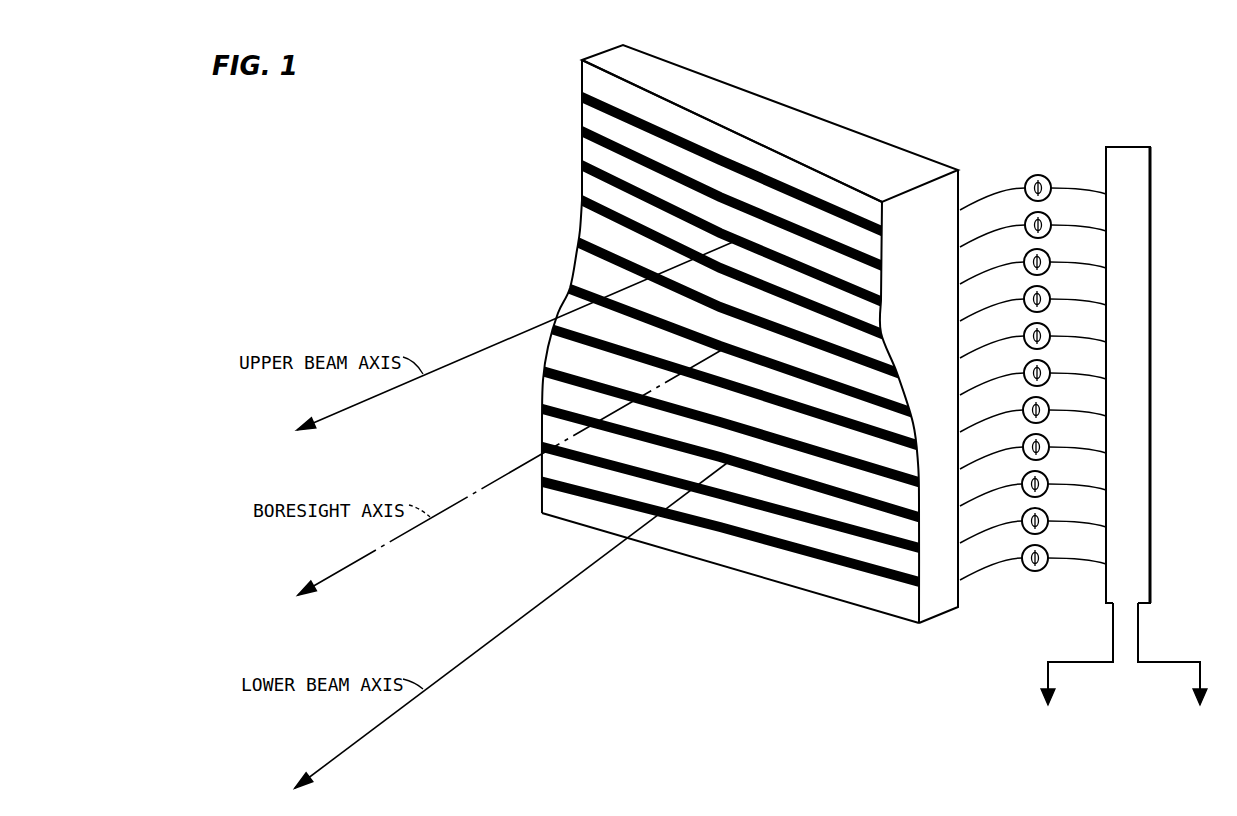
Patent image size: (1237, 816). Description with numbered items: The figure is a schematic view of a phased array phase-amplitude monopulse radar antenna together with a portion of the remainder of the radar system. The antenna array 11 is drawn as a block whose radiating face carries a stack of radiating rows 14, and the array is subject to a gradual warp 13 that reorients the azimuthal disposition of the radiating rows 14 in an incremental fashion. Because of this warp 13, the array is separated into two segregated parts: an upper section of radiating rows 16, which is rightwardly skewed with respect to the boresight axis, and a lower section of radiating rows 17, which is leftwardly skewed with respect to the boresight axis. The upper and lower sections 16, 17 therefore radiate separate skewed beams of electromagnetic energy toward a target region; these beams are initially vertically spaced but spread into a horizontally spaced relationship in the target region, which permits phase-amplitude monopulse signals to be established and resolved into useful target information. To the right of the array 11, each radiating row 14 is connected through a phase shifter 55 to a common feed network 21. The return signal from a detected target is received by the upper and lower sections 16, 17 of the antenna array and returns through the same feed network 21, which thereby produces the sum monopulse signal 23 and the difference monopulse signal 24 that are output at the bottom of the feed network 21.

The antenna array 11 is at (788, 110).
The gradual warp 13 is at (884, 340).
The radiating rows 14 is at (586, 106).
The upper section of radiating rows 16 is at (561, 222).
The lower section of radiating rows 17 is at (527, 410).
The feed network 21 is at (1130, 147).
The sum monopulse signal 23 is at (1090, 662).
The difference monopulse signal 24 is at (1163, 662).
The phase shifters 55 is at (1040, 170).